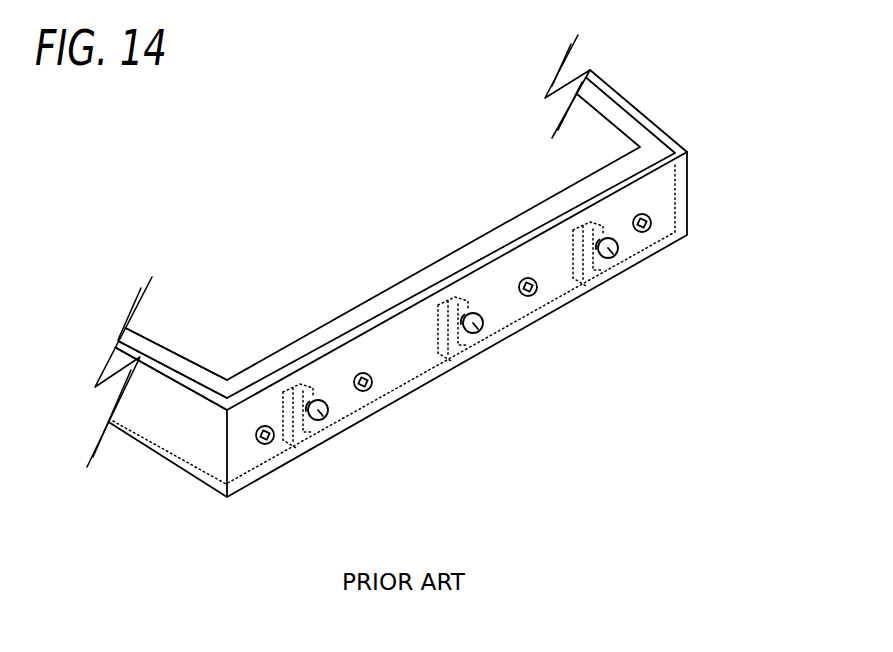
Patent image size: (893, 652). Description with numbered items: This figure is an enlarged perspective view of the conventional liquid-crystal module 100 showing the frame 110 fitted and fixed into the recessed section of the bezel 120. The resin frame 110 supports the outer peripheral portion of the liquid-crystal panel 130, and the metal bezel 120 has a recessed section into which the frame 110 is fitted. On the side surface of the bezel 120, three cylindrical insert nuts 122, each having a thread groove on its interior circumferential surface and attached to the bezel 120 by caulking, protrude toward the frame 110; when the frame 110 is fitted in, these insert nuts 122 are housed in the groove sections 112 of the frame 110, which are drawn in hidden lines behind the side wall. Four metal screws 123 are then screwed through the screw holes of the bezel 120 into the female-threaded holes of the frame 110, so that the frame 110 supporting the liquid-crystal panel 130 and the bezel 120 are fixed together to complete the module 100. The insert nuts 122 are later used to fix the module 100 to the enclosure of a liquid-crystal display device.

The liquid-crystal module 100 is at (637, 88).
The frame 110 is at (627, 130).
The bezel 120 is at (660, 190).
The liquid-crystal panel 130 is at (322, 222).
The groove sections 112 is at (307, 450).
The insert nuts 122 is at (323, 416).
The screws 123 is at (263, 444).